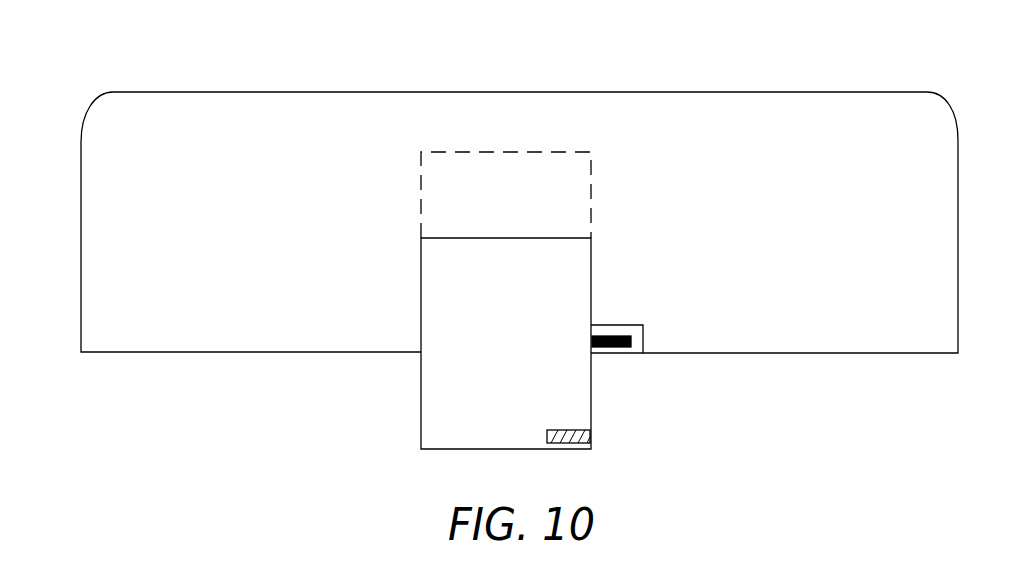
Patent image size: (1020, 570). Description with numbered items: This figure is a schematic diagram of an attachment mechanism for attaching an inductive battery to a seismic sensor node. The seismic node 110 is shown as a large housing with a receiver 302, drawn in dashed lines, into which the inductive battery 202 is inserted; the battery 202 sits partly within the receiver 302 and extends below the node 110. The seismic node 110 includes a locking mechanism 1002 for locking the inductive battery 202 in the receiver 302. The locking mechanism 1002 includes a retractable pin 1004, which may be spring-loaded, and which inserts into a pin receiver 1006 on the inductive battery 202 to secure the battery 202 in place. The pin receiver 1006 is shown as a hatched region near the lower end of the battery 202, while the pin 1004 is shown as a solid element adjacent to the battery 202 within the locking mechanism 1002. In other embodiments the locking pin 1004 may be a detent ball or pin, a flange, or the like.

The seismic node 110 is at (113, 92).
The receiver 302 is at (421, 152).
The inductive battery 202 is at (421, 238).
The locking mechanism 1002 is at (645, 325).
The retractable pin 1004 is at (605, 333).
The pin receiver 1006 is at (591, 432).